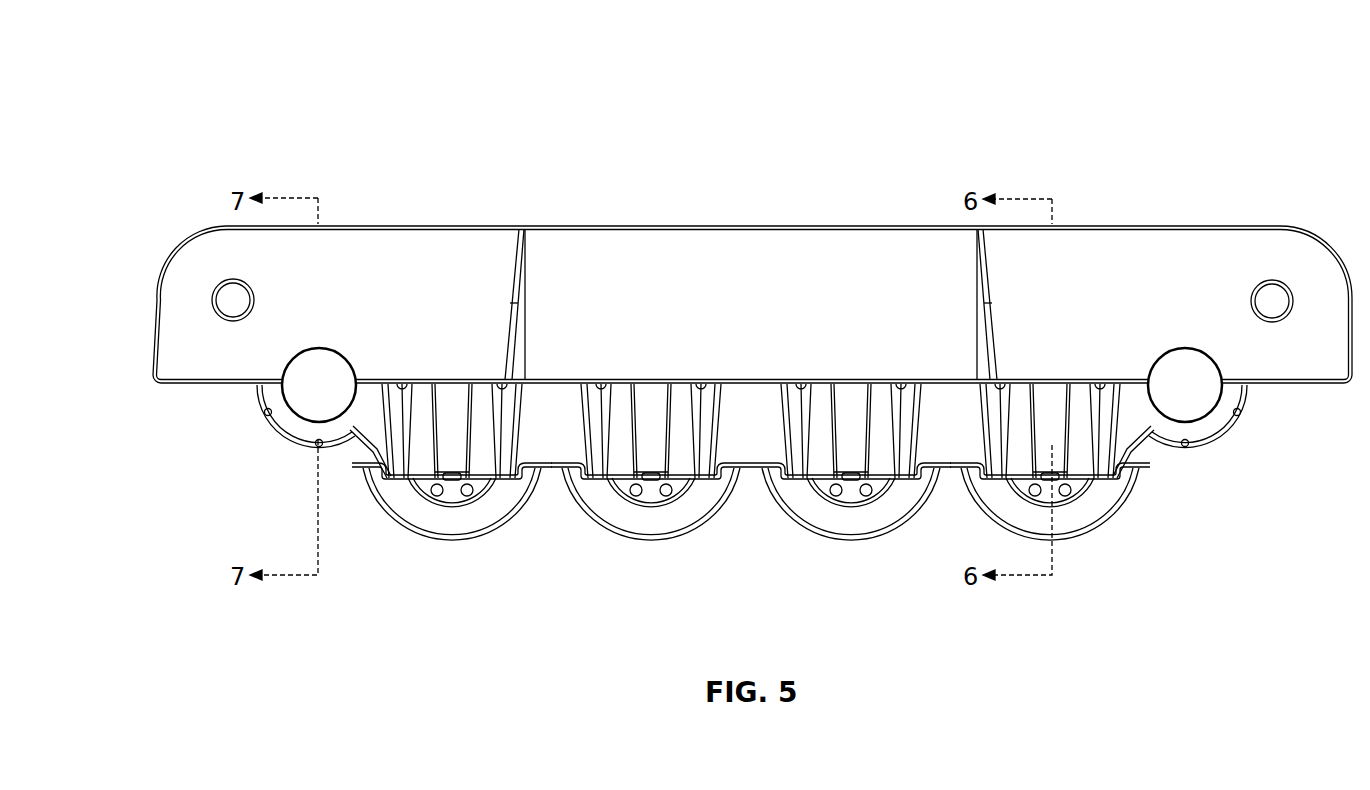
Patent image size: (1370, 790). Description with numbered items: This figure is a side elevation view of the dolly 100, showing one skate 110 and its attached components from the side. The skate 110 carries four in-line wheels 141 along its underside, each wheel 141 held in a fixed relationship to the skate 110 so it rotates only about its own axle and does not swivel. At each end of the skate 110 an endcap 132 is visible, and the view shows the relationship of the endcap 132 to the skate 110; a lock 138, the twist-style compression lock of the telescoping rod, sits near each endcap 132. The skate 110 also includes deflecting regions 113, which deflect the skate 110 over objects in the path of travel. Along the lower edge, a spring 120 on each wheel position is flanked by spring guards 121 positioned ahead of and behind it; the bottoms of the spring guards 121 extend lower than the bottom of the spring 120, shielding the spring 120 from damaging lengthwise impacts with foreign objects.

The dolly 100 is at (738, 88).
The skate 110 is at (818, 225).
The deflecting region 113 is at (303, 433).
The spring 120 is at (751, 503).
The spring guard 121 is at (582, 480).
The endcap 132 is at (302, 397).
The lock 138 is at (262, 397).
The wheel 141 is at (735, 497).